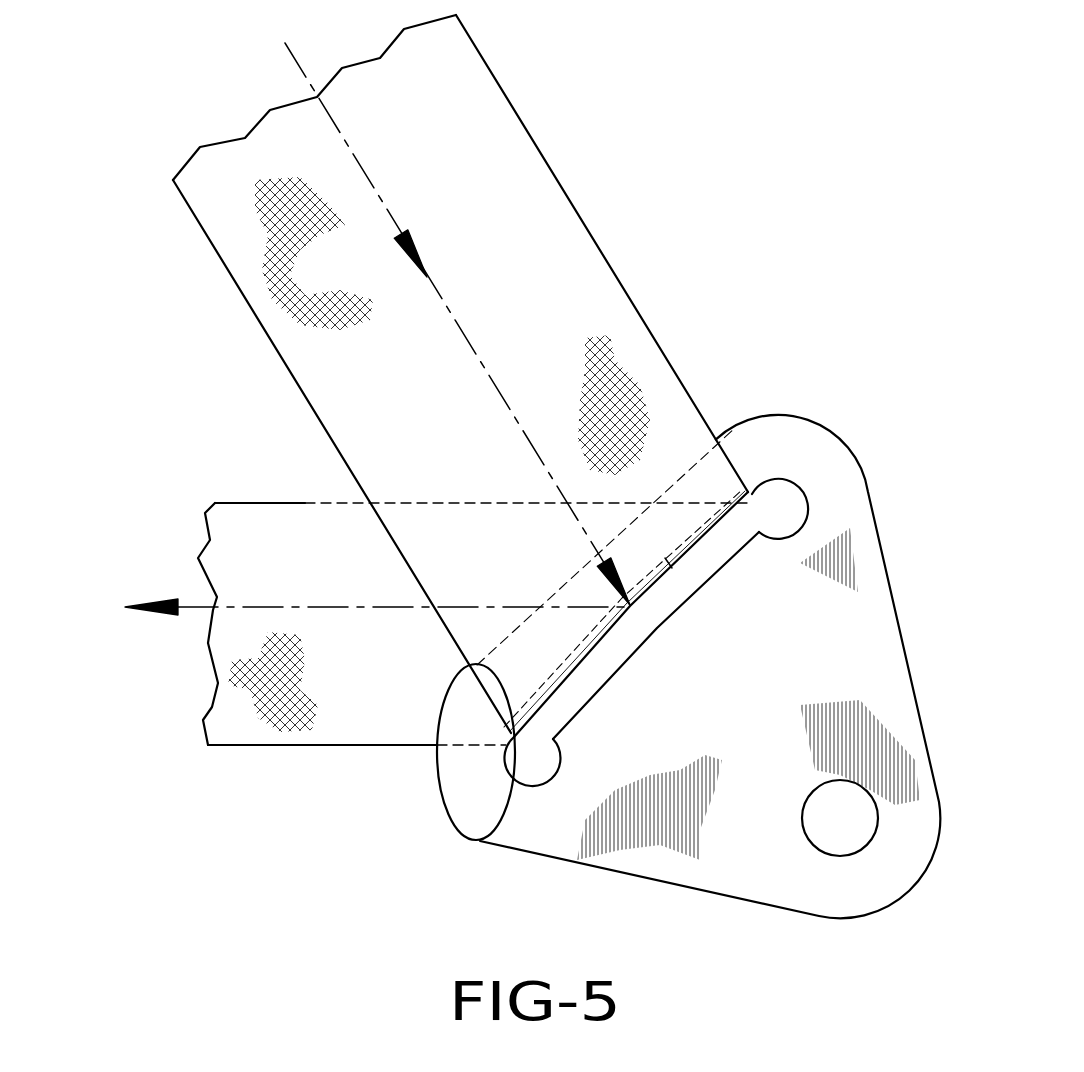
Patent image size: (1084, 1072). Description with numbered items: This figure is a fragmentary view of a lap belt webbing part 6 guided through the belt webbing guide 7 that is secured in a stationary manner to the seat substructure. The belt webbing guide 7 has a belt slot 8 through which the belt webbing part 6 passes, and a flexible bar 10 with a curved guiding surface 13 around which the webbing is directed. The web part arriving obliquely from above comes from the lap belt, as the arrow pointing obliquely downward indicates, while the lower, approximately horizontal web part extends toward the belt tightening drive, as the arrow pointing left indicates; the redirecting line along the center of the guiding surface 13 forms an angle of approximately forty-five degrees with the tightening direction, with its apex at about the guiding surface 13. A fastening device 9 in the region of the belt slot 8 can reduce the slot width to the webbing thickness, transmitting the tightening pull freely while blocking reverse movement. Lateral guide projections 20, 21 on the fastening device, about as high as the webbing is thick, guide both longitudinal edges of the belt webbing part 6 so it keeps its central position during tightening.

The belt webbing part 6 is at (297, 503).
The belt webbing guide 7 is at (758, 838).
The belt slot 8 is at (578, 710).
The fastening device 9 is at (622, 633).
The flexible bar 10 is at (520, 672).
The curved guiding surface 13 is at (678, 575).
The lateral guide projection 20 is at (775, 505).
The lateral guide projection 21 is at (480, 833).